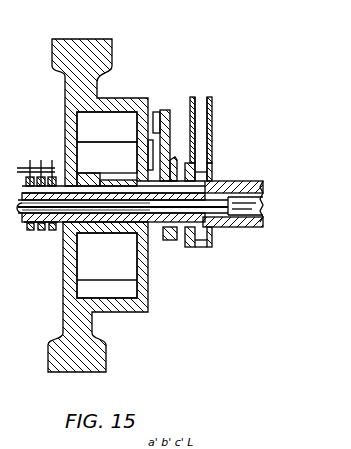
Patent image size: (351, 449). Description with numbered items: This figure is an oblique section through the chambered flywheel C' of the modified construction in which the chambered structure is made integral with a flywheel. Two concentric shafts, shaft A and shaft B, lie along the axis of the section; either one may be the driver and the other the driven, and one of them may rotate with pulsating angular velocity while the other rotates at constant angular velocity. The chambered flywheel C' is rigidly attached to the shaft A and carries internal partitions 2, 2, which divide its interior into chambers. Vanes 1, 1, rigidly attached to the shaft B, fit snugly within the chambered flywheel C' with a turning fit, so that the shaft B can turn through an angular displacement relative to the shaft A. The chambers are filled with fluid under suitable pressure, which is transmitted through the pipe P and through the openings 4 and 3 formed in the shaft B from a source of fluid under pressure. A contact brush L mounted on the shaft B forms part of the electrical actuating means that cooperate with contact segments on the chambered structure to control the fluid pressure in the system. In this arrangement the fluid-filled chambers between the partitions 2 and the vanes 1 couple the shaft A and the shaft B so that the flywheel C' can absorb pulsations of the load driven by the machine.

The vanes 1 is at (96, 147).
The internal partitions 2 is at (124, 266).
The opening 3 is at (116, 181).
The opening 4 is at (213, 172).
The shaft A is at (46, 222).
The shaft B is at (258, 184).
The chambered flywheel C' is at (111, 134).
The contact brush L is at (165, 112).
The pipe P is at (213, 126).